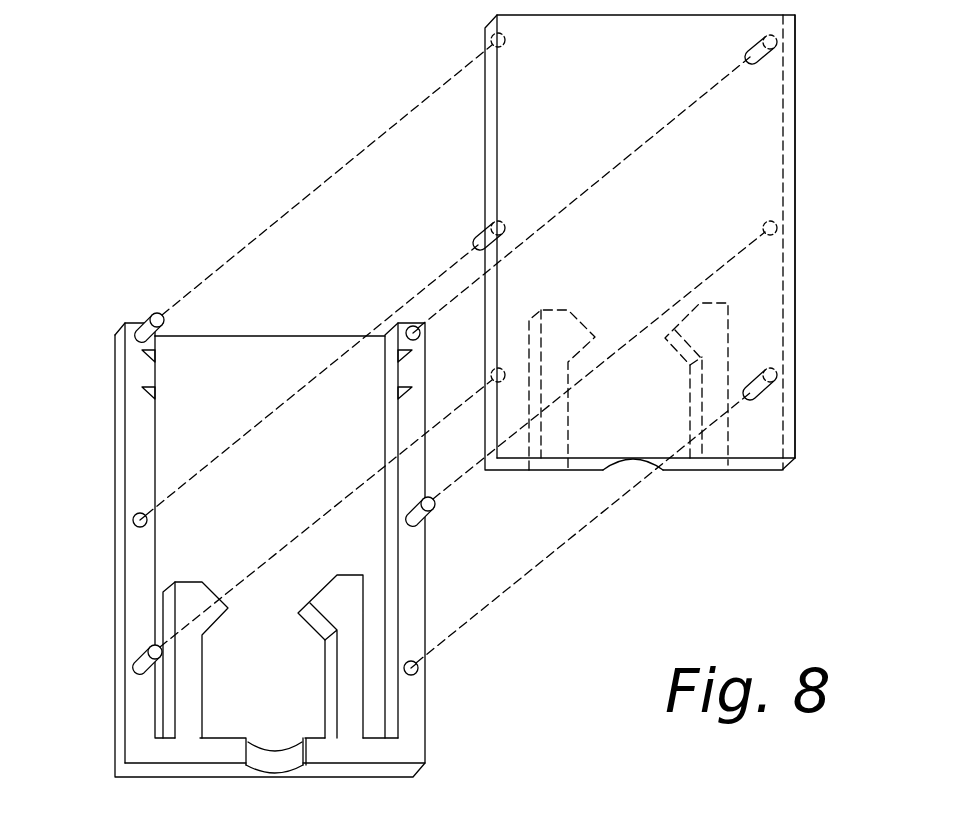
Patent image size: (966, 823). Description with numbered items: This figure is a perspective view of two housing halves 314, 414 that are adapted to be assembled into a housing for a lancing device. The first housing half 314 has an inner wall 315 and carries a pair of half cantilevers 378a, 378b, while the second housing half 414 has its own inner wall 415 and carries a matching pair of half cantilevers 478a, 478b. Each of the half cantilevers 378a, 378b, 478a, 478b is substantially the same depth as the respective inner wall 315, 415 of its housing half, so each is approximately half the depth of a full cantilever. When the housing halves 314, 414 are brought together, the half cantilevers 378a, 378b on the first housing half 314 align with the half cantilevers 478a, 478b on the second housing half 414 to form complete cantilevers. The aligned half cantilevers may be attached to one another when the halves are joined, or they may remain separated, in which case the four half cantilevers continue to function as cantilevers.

The first housing half 314 is at (275, 495).
The inner wall 315 is at (393, 442).
The half cantilever 378a is at (183, 707).
The half cantilever 378b is at (357, 712).
The second housing half 414 is at (719, 242).
The inner wall 415 is at (787, 138).
The half cantilever 478a is at (720, 330).
The half cantilever 478b is at (562, 420).